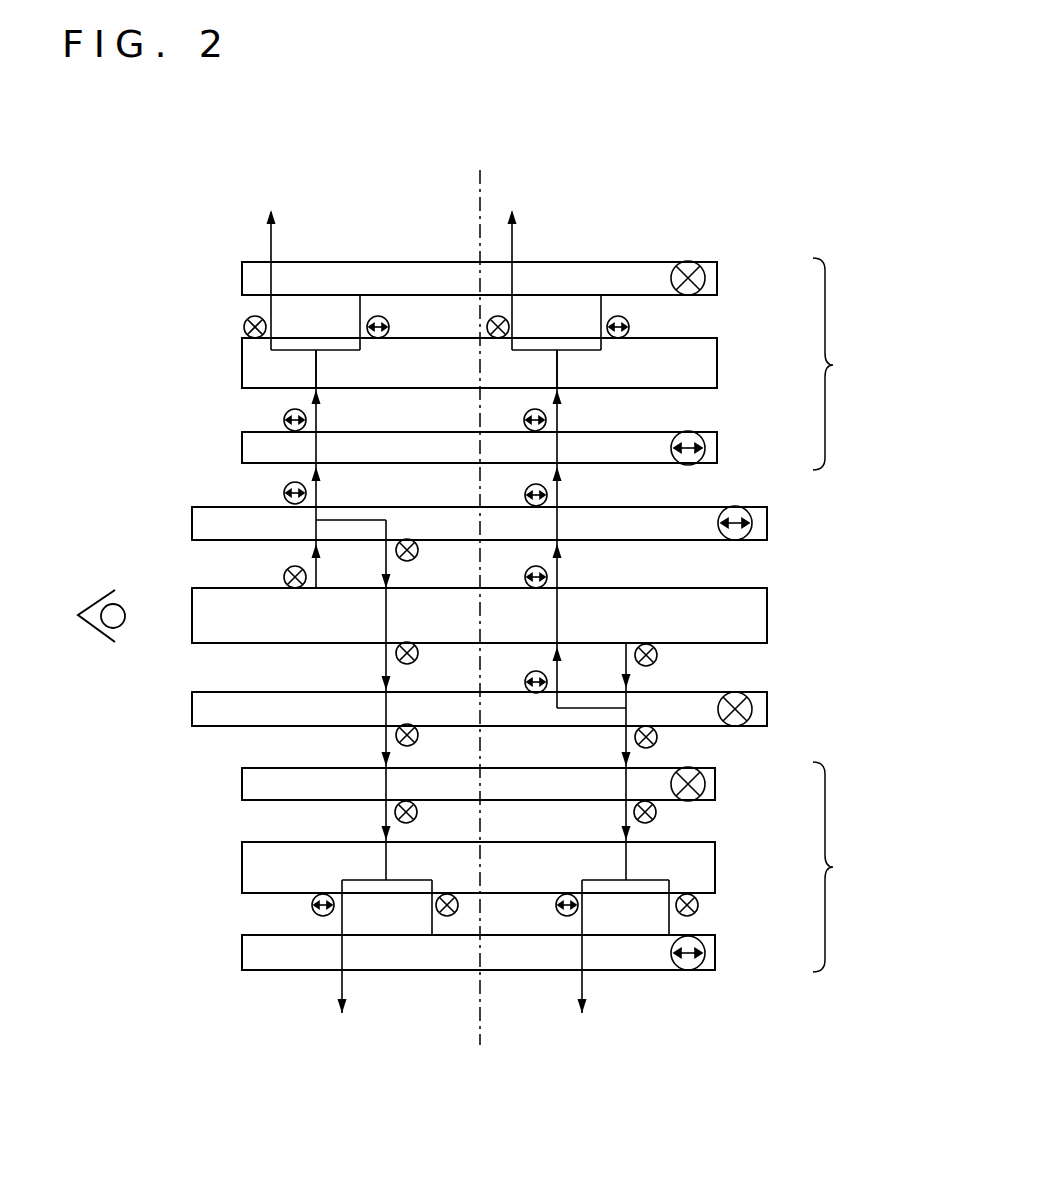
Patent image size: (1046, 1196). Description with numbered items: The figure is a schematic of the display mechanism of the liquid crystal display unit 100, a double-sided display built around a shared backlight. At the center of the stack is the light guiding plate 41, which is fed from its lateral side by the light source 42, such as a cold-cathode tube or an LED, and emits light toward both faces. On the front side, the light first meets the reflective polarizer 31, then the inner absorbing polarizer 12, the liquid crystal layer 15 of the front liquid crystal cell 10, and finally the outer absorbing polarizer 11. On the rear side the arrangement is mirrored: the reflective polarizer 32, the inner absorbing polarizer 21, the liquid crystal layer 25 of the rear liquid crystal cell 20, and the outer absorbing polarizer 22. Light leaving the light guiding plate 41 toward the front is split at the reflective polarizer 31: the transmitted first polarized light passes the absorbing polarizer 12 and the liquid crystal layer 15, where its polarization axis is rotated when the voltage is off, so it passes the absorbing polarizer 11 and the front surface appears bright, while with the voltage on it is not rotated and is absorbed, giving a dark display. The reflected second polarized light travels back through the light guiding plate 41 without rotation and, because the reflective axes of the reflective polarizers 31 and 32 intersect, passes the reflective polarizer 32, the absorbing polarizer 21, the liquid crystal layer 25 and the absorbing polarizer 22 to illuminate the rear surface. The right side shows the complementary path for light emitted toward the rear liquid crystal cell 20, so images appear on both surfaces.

The liquid crystal display unit 100 is at (727, 200).
The liquid crystal cell 10 is at (844, 364).
The absorbing polarizer 11 is at (717, 278).
The liquid crystal layer 15 is at (717, 365).
The absorbing polarizer 12 is at (717, 448).
The reflective polarizer 31 is at (767, 522).
The light guiding plate 41 is at (767, 615).
The reflective polarizer 32 is at (767, 708).
The liquid crystal cell 20 is at (844, 867).
The absorbing polarizer 21 is at (715, 784).
The liquid crystal layer 25 is at (715, 868).
The absorbing polarizer 22 is at (715, 953).
The light source 42 is at (117, 612).